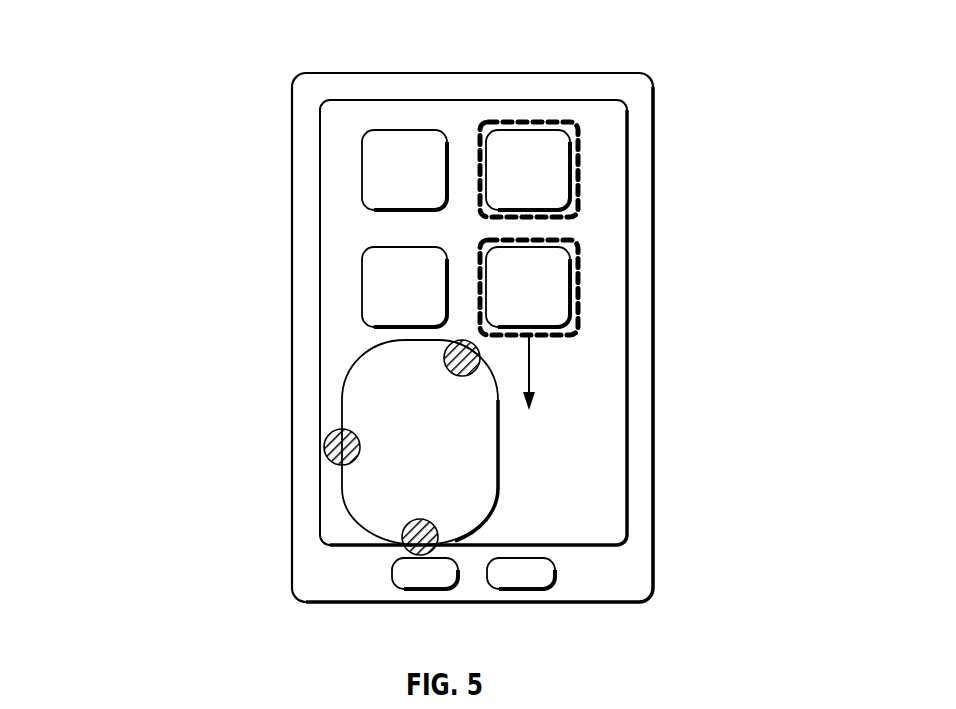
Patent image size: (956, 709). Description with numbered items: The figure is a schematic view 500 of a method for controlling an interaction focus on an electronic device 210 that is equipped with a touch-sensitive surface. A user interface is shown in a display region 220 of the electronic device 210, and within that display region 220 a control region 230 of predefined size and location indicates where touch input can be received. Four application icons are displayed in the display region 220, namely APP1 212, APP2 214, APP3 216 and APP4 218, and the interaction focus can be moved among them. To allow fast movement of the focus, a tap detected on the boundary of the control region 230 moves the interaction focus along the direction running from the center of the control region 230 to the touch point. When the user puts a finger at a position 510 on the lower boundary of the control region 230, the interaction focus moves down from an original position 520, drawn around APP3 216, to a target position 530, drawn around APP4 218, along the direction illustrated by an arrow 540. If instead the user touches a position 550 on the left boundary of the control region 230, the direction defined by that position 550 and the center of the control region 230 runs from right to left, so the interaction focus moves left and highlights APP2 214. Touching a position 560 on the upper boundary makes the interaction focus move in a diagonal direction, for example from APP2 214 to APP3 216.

The user interface screen of electronic device 500 is at (334, 56).
The electronic device 210 is at (292, 171).
The display region 220 is at (320, 278).
The control region 230 is at (351, 373).
The application icon APP1 212 is at (362, 153).
The application icon APP2 214 is at (362, 254).
The application icon APP3 216 is at (486, 153).
The application icon APP4 218 is at (486, 254).
The original position 520 is at (578, 134).
The target position 530 is at (578, 250).
The arrow 540 is at (566, 373).
The position 510 is at (407, 550).
The position 550 is at (324, 440).
The position 560 is at (446, 350).